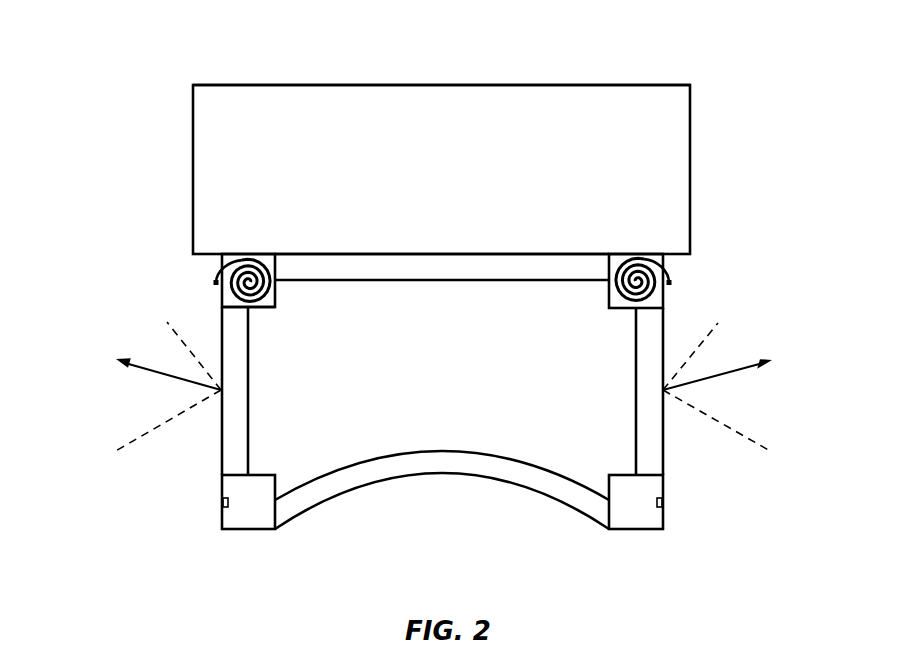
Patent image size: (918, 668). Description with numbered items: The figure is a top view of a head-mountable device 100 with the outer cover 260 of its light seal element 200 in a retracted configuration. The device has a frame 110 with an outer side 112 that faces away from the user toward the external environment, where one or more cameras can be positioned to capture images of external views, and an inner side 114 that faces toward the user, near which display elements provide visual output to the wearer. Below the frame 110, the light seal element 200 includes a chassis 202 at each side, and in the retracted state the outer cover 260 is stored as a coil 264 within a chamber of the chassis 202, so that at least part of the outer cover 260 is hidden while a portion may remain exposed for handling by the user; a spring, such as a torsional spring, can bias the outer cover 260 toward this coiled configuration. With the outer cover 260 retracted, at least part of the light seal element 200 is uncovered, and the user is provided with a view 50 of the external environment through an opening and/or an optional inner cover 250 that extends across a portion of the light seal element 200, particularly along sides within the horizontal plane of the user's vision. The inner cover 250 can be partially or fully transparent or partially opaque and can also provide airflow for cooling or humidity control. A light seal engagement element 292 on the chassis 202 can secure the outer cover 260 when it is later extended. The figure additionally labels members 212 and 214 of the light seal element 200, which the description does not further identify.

The head-mountable device 100 is at (135, 33).
The frame 110 is at (245, 85).
The outer side 112 is at (460, 85).
The inner side 114 is at (455, 254).
The light seal element 200 is at (443, 418).
The chassis 202 is at (258, 308).
The cross member 212 is at (443, 268).
The arched base member 214 is at (441, 462).
The inner cover 250 is at (243, 396).
The outer cover 260 is at (215, 283).
The coil 264 is at (276, 290).
The light seal engagement element 292 is at (224, 530).
The view 50 is at (158, 426).